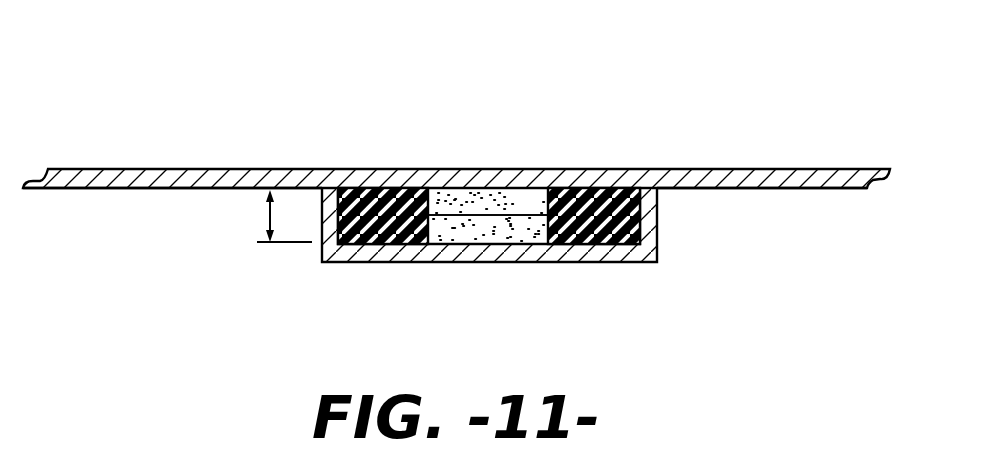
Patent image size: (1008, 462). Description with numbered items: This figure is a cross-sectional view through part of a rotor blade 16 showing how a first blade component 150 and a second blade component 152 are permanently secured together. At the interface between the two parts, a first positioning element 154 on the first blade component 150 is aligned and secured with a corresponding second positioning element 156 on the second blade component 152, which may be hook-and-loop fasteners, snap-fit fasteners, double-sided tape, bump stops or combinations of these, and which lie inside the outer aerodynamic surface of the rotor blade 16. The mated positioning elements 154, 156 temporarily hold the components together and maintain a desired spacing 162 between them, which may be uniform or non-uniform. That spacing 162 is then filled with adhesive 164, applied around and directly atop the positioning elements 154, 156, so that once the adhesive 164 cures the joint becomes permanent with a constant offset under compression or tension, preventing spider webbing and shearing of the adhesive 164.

The rotor blade 16 is at (209, 87).
The first blade component 150 is at (151, 202).
The second blade component 152 is at (745, 202).
The first positioning element 154 is at (467, 200).
The second positioning element 156 is at (496, 217).
The desired spacing 162 is at (262, 215).
The adhesive 164 is at (385, 220).